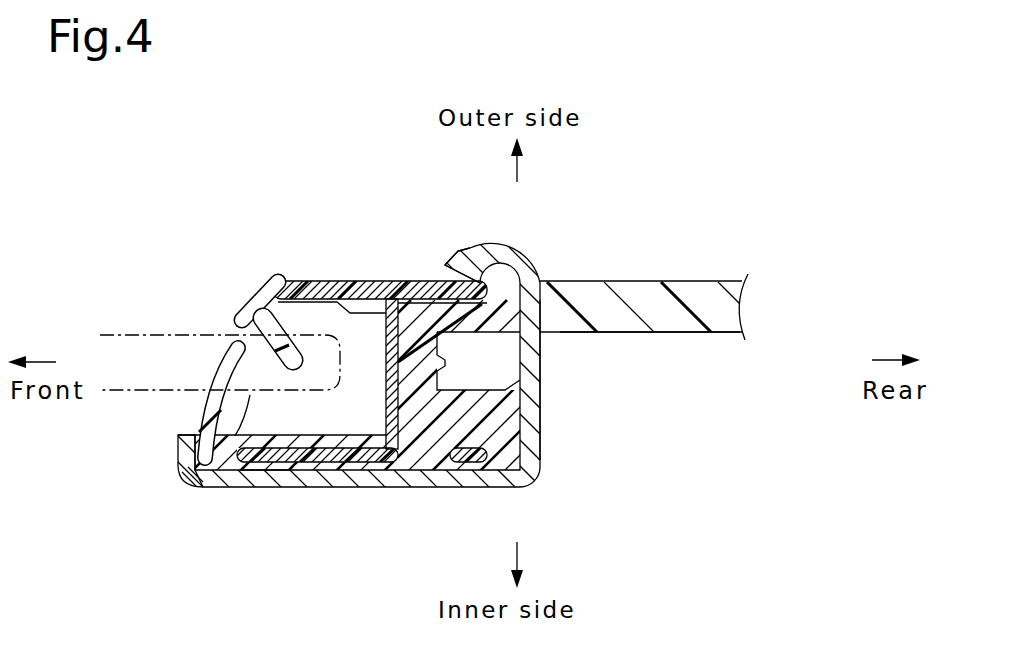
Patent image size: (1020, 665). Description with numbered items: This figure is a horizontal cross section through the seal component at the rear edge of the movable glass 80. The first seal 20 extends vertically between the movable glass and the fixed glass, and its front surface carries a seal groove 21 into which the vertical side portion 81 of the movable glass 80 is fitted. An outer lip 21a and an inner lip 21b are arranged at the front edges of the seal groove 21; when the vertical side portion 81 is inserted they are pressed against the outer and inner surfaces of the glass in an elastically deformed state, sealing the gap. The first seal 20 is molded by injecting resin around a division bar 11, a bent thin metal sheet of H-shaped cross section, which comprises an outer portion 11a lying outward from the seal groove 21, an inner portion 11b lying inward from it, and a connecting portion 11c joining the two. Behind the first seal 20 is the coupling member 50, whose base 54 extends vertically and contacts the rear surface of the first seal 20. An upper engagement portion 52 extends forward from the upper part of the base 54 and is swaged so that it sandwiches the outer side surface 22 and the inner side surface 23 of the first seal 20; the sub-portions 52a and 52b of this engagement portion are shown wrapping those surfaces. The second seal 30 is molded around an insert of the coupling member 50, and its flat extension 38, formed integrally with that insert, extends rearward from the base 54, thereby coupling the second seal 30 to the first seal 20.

The division bar 11 is at (361, 381).
The outer portion 11a is at (350, 281).
The inner portion 11b is at (341, 472).
The connecting portion 11c is at (430, 478).
The first seal 20 is at (202, 481).
The seal groove 21 is at (211, 393).
The outer lip 21a is at (246, 312).
The inner lip 21b is at (207, 355).
The outer side surface 22 is at (408, 285).
The inner side surface 23 is at (398, 476).
The second seal 30 is at (673, 276).
The extension 38 is at (664, 334).
The coupling member 50 is at (389, 392).
The upper engagement portion 52 is at (540, 489).
The hook portion of outer shell 52a is at (458, 238).
The bottom portion of outer shell 52b is at (226, 489).
The base 54 is at (543, 414).
The movable glass 80 is at (129, 322).
The vertical side portion 81 is at (258, 472).